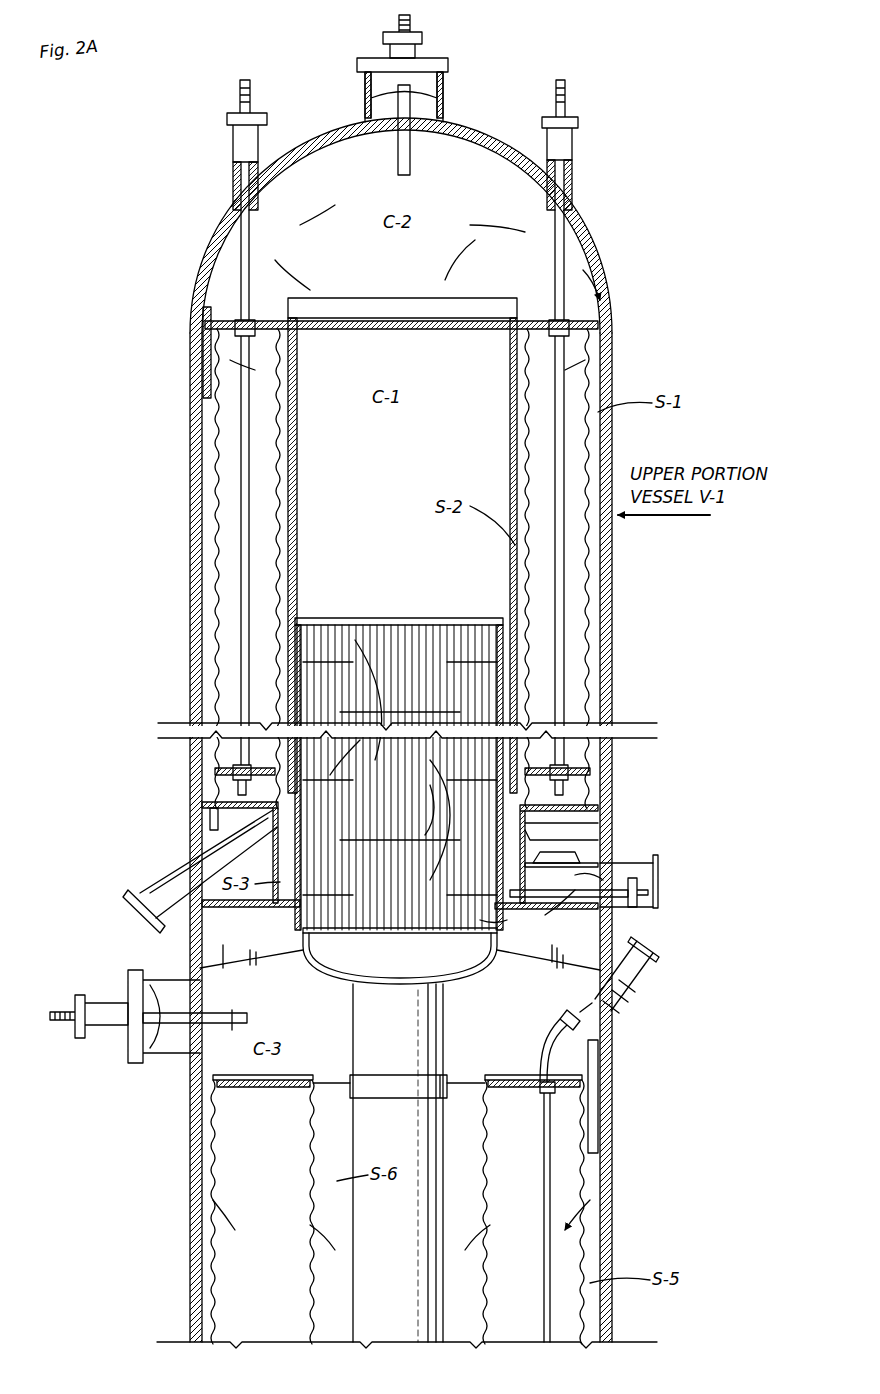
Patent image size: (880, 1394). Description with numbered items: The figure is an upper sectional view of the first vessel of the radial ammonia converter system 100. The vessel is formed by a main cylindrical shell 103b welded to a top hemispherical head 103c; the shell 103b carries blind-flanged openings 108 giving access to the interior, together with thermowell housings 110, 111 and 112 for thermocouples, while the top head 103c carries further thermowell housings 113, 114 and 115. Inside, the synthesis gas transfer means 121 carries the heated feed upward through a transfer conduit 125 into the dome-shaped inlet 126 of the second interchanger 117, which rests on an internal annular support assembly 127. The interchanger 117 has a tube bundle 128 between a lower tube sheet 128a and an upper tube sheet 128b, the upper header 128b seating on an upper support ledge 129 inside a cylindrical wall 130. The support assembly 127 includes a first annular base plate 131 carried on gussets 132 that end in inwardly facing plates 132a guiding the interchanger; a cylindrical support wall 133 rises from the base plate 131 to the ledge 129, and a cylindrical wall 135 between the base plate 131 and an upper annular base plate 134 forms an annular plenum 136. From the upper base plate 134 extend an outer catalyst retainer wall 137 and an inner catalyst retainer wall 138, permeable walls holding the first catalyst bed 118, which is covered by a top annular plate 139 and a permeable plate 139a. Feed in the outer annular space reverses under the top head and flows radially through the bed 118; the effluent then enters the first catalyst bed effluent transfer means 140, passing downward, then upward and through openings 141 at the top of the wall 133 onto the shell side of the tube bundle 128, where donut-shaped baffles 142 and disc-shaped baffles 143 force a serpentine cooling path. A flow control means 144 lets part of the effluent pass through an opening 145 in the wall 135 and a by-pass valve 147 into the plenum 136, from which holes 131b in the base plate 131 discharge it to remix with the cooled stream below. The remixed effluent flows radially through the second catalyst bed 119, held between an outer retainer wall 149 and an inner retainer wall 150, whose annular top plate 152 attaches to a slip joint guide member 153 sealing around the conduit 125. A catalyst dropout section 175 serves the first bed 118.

The radial ammonia converter system 100 is at (176, 645).
The main cylindrical shell 103b is at (605, 1140).
The top hemispherical head 103c is at (590, 232).
The openings 108 is at (363, 79).
The thermowell housing 110 is at (110, 1032).
The thermowell housing 111 is at (622, 912).
The thermowell housing 112 is at (612, 962).
The thermowell housing 113 is at (232, 142).
The thermowell housing 114 is at (440, 60).
The thermowell housing 115 is at (576, 135).
The second heat exchange means or interchanger 117 is at (330, 612).
The first catalyst bed 118 is at (568, 548).
The second catalyst bed 119 is at (228, 1175).
The synthesis gas transfer means 121 is at (400, 448).
The conduit 125 is at (398, 1134).
The dome-shaped inlet 126 is at (333, 987).
The annular support assembly 127 is at (200, 800).
The tube bundle 128 is at (433, 930).
The lower tube sheet 128a is at (395, 932).
The upper tube sheet 128b is at (398, 625).
The upper support ledge 129 is at (500, 620).
The cylindrical wall 130 is at (297, 432).
The first annular base plate 131 is at (560, 930).
The holes 131b is at (205, 925).
The gussets 132 is at (592, 934).
The inwardly facing plates 132a is at (282, 950).
The cylindrical support wall 133 is at (510, 920).
The upper annular base plate 134 is at (580, 792).
The cylindrical wall 135 is at (585, 822).
The annular plenum 136 is at (590, 832).
The outer cylindrical catalyst retainer wall 137 is at (586, 448).
The inner cylindrical catalyst retainer wall 138 is at (517, 428).
The top annular plate or cover means 139 is at (265, 320).
The permeable plate 139a is at (350, 330).
The first catalyst bed effluent transfer means 140 is at (570, 755).
The openings 141 is at (470, 618).
The donut-shaped baffles 142 is at (485, 960).
The disc-shaped baffles 143 is at (365, 622).
The first flow control means 144 is at (630, 857).
The opening 145 is at (505, 880).
The valve or by-pass control means 147 is at (570, 852).
The outer cylindrical retainer wall 149 is at (215, 1270).
The inner cylindrical retainer wall 150 is at (320, 1212).
The annular top plate 152 is at (233, 1088).
The slip joint guide member 153 is at (447, 1085).
The catalyst removal or dropout section 175 is at (165, 870).